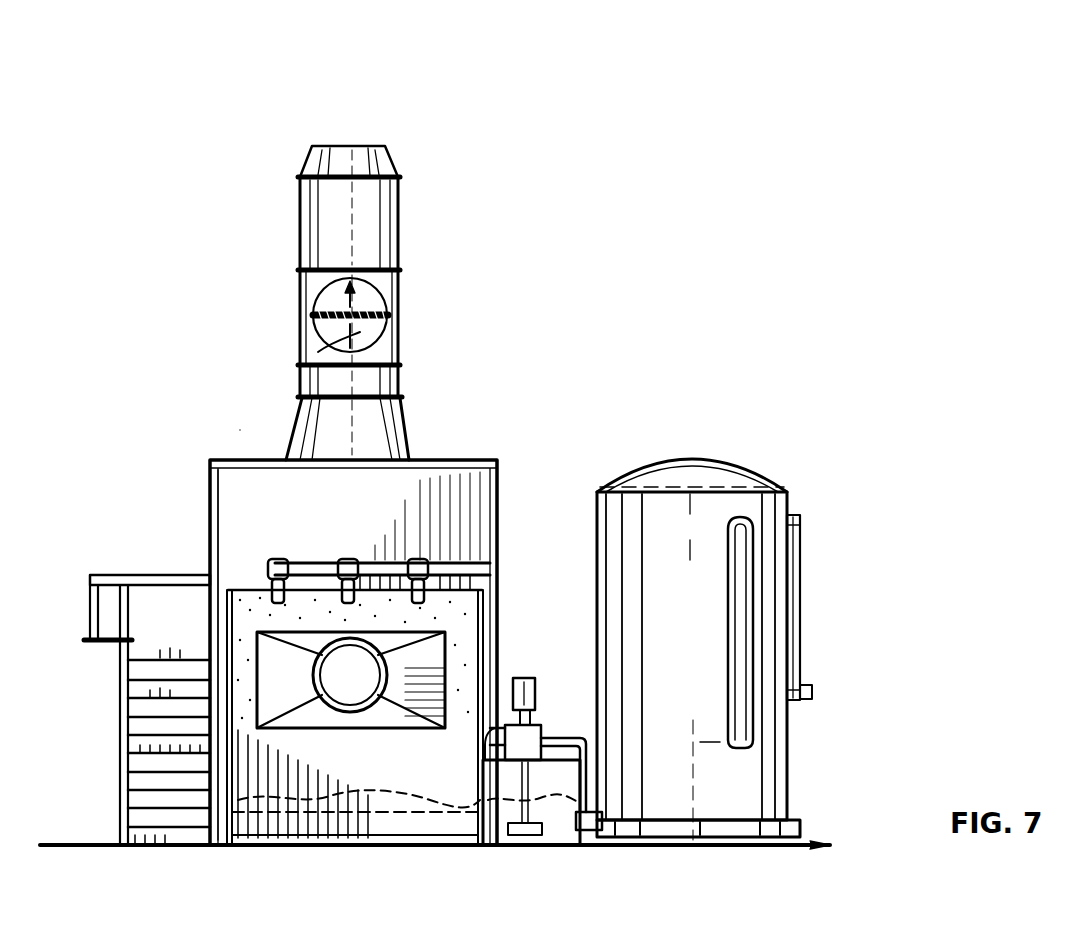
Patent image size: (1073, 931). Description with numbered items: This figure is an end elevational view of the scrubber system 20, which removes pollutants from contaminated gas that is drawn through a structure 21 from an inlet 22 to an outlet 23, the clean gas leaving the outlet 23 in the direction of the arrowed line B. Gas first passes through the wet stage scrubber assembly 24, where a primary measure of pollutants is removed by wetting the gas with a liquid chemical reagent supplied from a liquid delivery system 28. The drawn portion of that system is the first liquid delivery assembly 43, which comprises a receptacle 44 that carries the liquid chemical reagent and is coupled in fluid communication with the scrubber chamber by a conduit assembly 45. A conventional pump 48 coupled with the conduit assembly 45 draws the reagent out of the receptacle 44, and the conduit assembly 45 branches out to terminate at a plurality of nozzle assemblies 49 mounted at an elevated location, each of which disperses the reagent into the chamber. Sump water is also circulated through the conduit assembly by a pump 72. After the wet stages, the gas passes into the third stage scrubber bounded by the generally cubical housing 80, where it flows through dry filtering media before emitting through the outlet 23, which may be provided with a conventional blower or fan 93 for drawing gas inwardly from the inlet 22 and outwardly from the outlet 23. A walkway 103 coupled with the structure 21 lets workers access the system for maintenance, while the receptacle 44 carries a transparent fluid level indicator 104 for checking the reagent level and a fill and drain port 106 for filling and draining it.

The scrubber system 20 is at (578, 336).
The structure 21 is at (499, 460).
The inlet 22 is at (375, 712).
The outlet 23 is at (375, 217).
The wet stage scrubber assembly 24 is at (514, 610).
The liquid delivery system 28 is at (768, 471).
The first liquid delivery assembly 43 is at (700, 462).
The receptacle 44 is at (760, 512).
The conduit assembly 45 is at (562, 738).
The pump 48 is at (548, 762).
The nozzle assemblies 49 is at (418, 562).
The pump 72 is at (524, 708).
The housing 80 is at (242, 487).
The blower or fan 93 is at (385, 318).
The walkway 103 is at (97, 646).
The transparent fluid level indicator 104 is at (742, 712).
The fill and drain port 106 is at (796, 600).
The arrowed line B is at (352, 35).